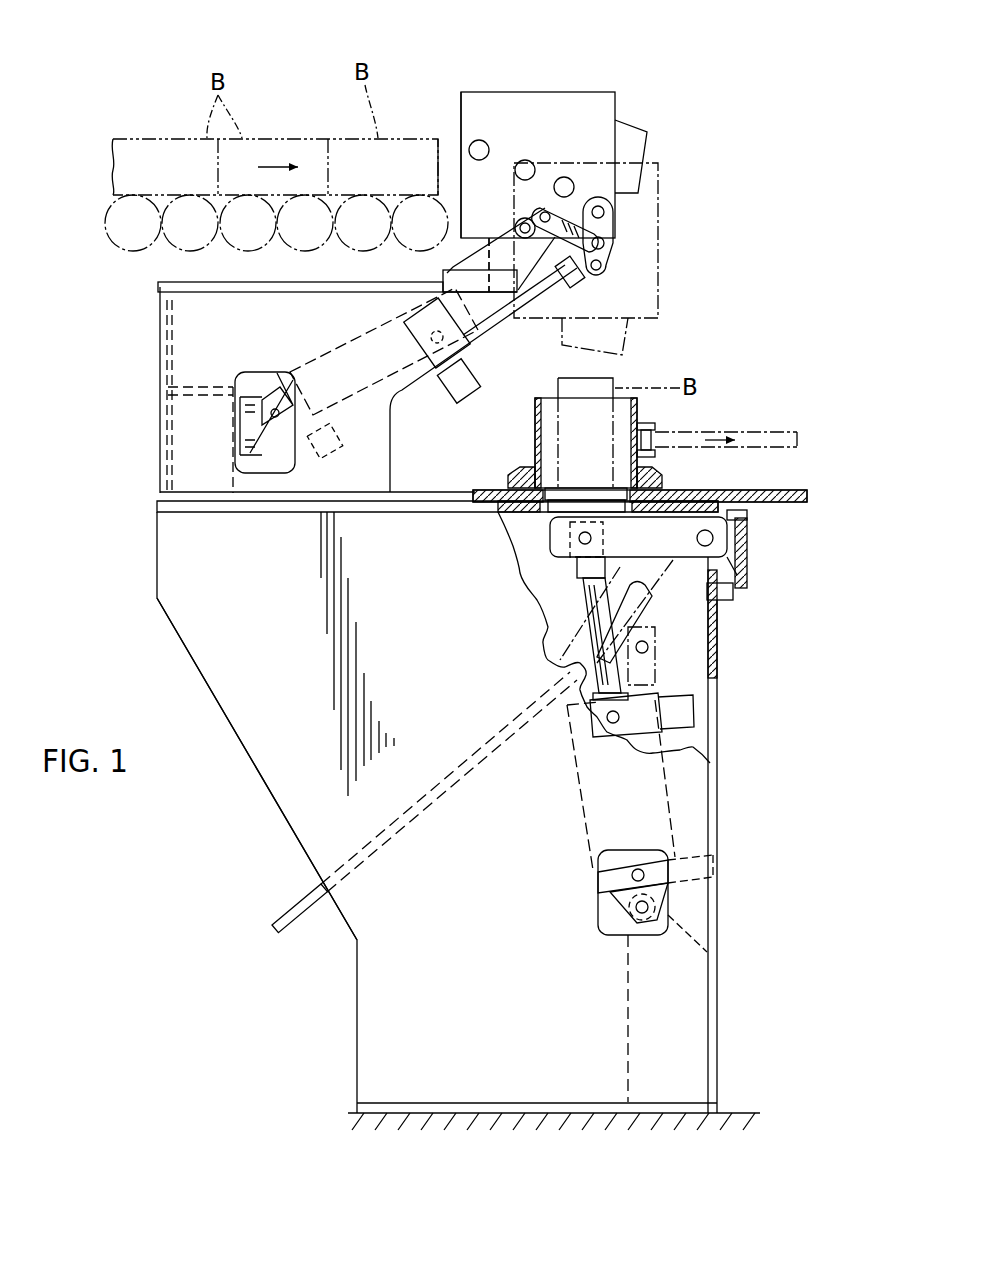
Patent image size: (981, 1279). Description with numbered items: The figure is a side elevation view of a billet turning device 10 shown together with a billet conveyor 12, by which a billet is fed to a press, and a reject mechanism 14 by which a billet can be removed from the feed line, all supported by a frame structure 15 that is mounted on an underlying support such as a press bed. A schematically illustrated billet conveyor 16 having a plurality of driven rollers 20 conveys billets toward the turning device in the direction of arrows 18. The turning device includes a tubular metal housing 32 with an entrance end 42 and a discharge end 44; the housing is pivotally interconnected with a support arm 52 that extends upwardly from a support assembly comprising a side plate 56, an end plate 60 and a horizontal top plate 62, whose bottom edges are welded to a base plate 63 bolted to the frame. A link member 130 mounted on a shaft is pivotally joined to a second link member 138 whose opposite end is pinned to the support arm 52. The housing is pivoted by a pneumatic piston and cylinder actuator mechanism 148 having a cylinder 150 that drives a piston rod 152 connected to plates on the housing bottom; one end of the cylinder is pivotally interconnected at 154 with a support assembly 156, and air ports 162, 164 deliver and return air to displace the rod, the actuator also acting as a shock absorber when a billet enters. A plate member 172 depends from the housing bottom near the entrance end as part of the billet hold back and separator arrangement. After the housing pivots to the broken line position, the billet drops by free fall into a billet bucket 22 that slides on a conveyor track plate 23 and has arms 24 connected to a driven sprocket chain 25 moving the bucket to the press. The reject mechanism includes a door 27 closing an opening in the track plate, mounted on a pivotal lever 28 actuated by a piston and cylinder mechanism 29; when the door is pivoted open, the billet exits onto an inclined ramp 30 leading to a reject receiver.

The billet turning device 10 is at (432, 73).
The billet conveyor 12 is at (732, 383).
The reject mechanism 14 is at (500, 650).
The frame structure 15 is at (243, 748).
The billet conveyor 16 is at (162, 250).
The arrows 18 is at (275, 165).
The rollers 20 is at (407, 203).
The billet bucket 22 is at (535, 445).
The conveyor track plate 23 is at (788, 492).
The arms 24 is at (655, 452).
The sprocket chain 25 is at (773, 442).
The door 27 is at (657, 488).
The pivotal lever 28 is at (677, 523).
The piston and cylinder mechanism 29 is at (683, 737).
The inclined ramp 30 is at (300, 905).
The housing 32 is at (555, 90).
The entrance end 42 is at (455, 119).
The discharge end 44 is at (622, 115).
The support arm 52 is at (502, 233).
The side plate 56 is at (228, 323).
The end plate 60 is at (160, 355).
The horizontal top plate 62 is at (313, 290).
The base plate 63 is at (185, 495).
The link member 130 is at (613, 222).
The second link member 138 is at (613, 230).
The pneumatic piston and cylinder actuator mechanism 148 is at (407, 395).
The cylinder 150 is at (363, 325).
The piston rod 152 is at (550, 293).
The pivotal interconnection 154 is at (276, 418).
The support assembly 156 is at (265, 390).
The air port 162 is at (330, 400).
The air port 164 is at (410, 335).
The plate member 172 is at (450, 262).